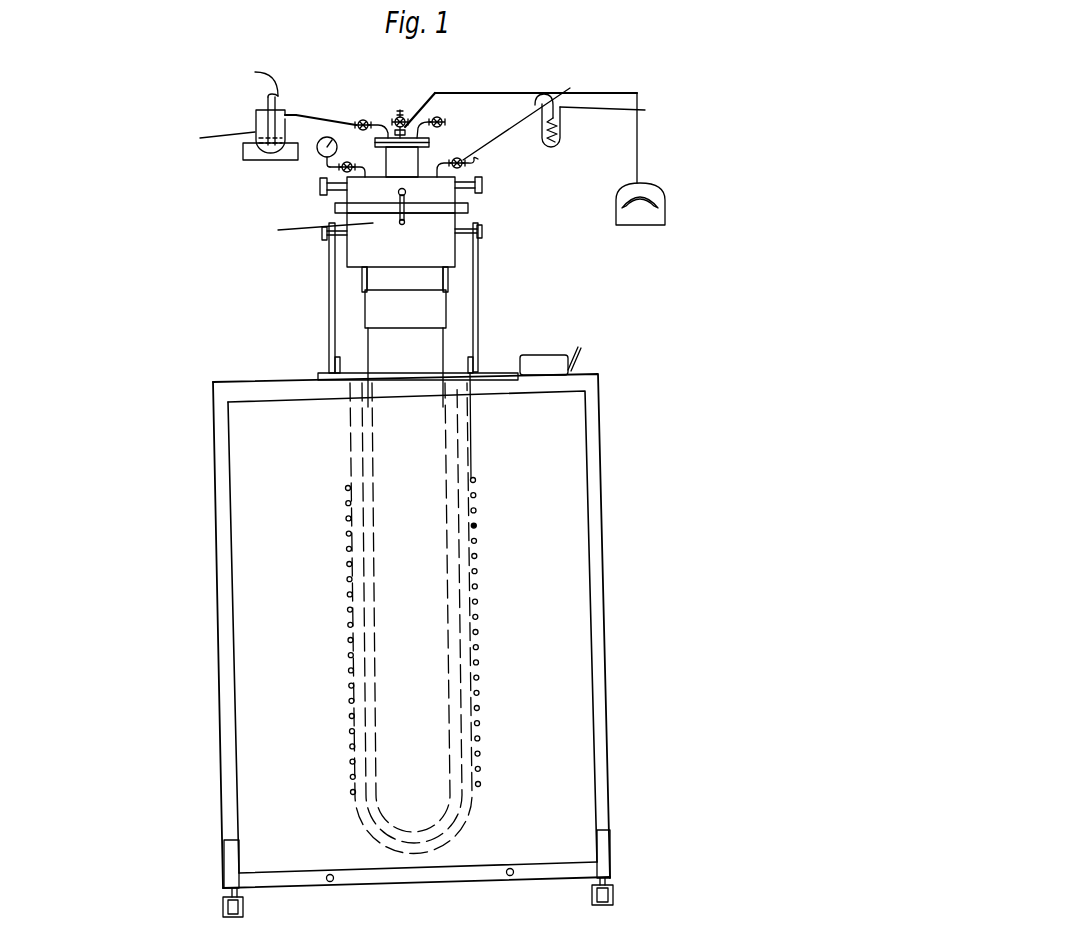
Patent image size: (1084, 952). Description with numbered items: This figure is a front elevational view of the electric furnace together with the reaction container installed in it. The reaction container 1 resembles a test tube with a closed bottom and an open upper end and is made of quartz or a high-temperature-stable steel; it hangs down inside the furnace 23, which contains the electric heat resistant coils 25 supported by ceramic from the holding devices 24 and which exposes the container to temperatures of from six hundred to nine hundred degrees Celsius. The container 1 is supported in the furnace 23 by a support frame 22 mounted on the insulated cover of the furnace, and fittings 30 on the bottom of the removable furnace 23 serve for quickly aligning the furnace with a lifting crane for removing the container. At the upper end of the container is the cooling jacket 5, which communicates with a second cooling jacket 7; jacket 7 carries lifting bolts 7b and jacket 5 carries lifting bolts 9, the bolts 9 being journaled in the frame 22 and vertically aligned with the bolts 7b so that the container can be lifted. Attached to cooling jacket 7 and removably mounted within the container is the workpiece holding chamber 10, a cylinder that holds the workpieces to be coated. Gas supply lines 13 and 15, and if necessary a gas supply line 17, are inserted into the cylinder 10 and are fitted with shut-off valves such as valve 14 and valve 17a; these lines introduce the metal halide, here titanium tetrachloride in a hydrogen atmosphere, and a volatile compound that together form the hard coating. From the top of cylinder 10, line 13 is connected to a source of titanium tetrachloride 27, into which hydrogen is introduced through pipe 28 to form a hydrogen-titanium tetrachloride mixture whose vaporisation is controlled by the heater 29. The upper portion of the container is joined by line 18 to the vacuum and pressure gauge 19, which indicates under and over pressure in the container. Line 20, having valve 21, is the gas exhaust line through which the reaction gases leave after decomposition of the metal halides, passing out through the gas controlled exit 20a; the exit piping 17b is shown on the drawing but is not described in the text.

The reaction container 1 is at (484, 341).
The cooling jacket 5 is at (401, 240).
The second cooling jacket 7 is at (406, 192).
The lifting bolts 7b is at (385, 193).
The lifting bolts 9 is at (322, 234).
The workpiece holding chamber 10 is at (418, 157).
The gas supply line 13 is at (334, 118).
The shut-off valve 14 is at (365, 118).
The gas supply line 15 is at (442, 122).
The gas supply line 17 is at (400, 110).
The shut-off valve 17a is at (435, 93).
The gas exit pipe 17b is at (509, 93).
The line 18 is at (326, 168).
The vacuum and pressure gauge 19 is at (338, 147).
The gas exhaust line 20 is at (478, 162).
The gas controlled exit 20a is at (561, 137).
The valve 21 is at (466, 156).
The support frame 22 is at (329, 297).
The furnace 23 is at (590, 430).
The holding devices 24 is at (622, 572).
The electric heat resistant coils 25 is at (612, 528).
The source of titanium tetrachloride 27 is at (256, 118).
The pipe 28 is at (268, 103).
The heater 29 is at (245, 160).
The fittings 30 is at (232, 862).